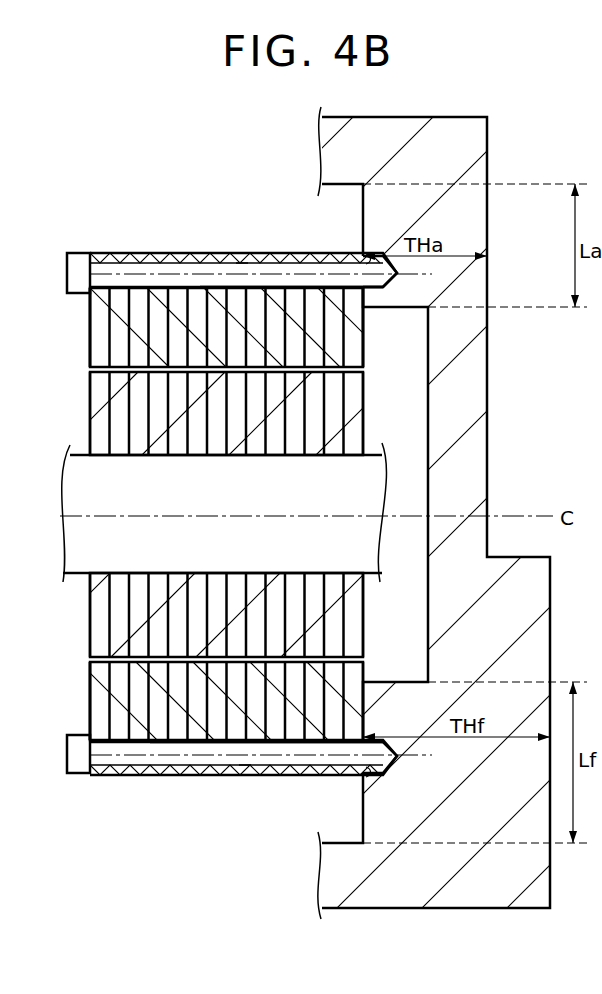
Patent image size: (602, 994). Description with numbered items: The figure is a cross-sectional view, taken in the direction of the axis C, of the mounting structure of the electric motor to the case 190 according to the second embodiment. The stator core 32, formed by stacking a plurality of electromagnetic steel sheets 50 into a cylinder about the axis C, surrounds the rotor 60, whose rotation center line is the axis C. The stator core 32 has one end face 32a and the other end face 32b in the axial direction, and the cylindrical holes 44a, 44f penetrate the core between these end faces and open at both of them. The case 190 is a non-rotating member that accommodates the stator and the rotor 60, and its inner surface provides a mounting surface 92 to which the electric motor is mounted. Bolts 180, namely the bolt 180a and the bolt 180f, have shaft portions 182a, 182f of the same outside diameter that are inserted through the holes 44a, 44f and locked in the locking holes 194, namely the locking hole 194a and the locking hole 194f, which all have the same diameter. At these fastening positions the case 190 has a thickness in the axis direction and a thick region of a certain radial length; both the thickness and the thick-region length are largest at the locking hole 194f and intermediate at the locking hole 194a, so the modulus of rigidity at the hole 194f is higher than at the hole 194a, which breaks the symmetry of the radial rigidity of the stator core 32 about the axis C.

The stator core 32 is at (193, 246).
The one end face of the stator core 32a is at (90, 295).
The other end face of the stator core 32b is at (363, 292).
The cylindrical hole 44a is at (240, 262).
The cylindrical hole 44f is at (246, 764).
The electromagnetic steel sheet 50 is at (123, 253).
The rotor 60 is at (218, 424).
The mounting surface 92 is at (363, 253).
The bolt 180 is at (229, 510).
The bolt 180a is at (229, 218).
The bolt 180f is at (234, 806).
The shaft portion of the bolt 182a is at (273, 267).
The shaft portion of the bolt 182f is at (178, 762).
The case 190 is at (473, 443).
The locking hole 194 is at (470, 463).
The locking hole 194a is at (382, 257).
The locking hole 194f is at (443, 805).